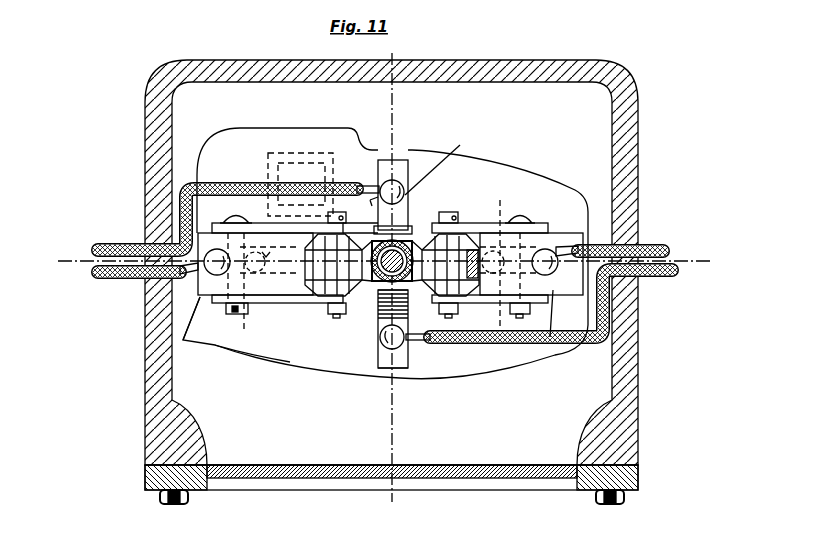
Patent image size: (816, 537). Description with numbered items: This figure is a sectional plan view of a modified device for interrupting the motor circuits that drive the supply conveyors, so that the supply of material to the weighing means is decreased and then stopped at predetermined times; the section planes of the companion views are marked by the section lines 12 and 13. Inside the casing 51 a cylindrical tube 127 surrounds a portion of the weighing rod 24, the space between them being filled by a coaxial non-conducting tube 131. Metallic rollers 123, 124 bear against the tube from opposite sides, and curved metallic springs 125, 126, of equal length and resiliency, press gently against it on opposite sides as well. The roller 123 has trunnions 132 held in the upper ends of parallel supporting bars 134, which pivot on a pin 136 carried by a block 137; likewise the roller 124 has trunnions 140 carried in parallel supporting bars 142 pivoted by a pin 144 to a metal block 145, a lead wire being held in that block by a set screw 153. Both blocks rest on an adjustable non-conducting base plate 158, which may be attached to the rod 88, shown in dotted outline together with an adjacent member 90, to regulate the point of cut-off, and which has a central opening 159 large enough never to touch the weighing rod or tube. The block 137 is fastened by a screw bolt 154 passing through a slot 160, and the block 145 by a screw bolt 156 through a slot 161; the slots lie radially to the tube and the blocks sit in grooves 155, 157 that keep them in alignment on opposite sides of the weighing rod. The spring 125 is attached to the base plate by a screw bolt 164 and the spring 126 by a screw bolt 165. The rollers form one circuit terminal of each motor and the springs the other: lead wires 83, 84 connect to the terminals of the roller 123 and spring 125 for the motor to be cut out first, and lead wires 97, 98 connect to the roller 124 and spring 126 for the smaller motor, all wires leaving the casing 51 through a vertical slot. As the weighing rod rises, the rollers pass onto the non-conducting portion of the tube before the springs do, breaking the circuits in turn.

The section line 12- 12 is at (66, 263).
The section line 13- 13 is at (392, 53).
The weighing rod 24 is at (418, 222).
The casing 51 is at (632, 126).
The lead wire 83 is at (112, 283).
The lead wire 84 is at (120, 243).
The rod 88 is at (316, 150).
The member 90 is at (293, 150).
The lead wire 97 is at (652, 243).
The lead wire 98 is at (658, 278).
The metallic roller 123 is at (308, 265).
The metallic roller 124 is at (444, 350).
The curved metallic spring 125 is at (403, 157).
The curved metallic spring 126 is at (404, 368).
The cylindrical tube 127 is at (420, 285).
The non-conducting tube 131 is at (373, 220).
The trunnions 132 is at (334, 316).
The supporting bars 134 is at (270, 220).
The pin 136 is at (233, 347).
The block 137 is at (187, 336).
The trunnions 140 is at (450, 212).
The supporting bars 142 is at (487, 223).
The pin 144 is at (526, 215).
The metal block 145 is at (553, 338).
The set screw 153 is at (548, 352).
The screw bolt 154 is at (265, 252).
The groove 155 is at (200, 290).
The screw bolt 156 is at (485, 232).
The groove 157 is at (590, 235).
The base plate 158 is at (513, 165).
The central opening 159 is at (374, 290).
The slot 160 is at (237, 314).
The slot 161 is at (547, 224).
The screw bolt 164 is at (447, 165).
The screw bolt 165 is at (383, 370).